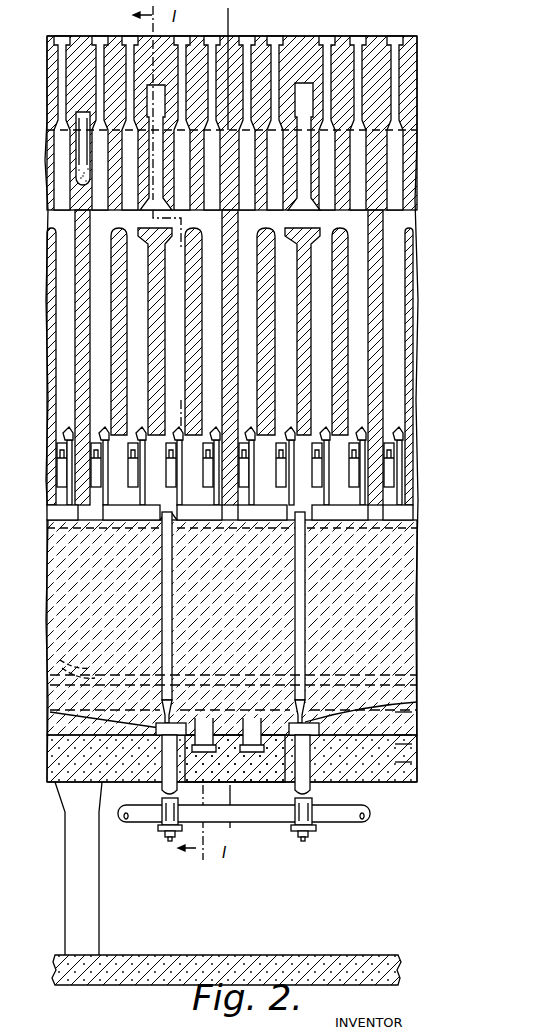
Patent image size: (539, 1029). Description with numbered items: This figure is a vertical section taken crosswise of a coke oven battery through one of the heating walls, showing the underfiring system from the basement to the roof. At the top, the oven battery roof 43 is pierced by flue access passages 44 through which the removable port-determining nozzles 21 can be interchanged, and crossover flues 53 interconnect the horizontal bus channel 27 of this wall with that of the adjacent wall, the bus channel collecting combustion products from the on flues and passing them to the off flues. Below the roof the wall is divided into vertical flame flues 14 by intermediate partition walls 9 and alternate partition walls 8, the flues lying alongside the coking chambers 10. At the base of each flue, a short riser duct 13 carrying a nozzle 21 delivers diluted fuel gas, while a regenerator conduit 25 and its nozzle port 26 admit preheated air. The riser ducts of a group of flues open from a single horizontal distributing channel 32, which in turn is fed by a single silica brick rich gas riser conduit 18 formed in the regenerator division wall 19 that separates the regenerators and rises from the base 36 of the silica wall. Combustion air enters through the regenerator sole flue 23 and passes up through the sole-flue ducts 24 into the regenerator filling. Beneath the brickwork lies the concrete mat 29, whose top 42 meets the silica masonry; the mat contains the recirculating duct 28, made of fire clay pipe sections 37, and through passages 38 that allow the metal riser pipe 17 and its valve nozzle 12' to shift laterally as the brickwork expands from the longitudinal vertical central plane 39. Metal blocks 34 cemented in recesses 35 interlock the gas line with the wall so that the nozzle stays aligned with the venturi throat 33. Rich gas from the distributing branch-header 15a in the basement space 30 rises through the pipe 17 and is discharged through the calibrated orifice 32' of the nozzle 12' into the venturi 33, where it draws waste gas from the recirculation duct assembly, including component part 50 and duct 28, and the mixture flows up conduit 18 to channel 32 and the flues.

The alternate partition wall 8 is at (82, 300).
The intermediate partition wall 9 is at (115, 275).
The coking chamber 10 is at (82, 154).
The valve nozzle 12' is at (157, 702).
The riser duct 13 is at (112, 508).
The flame flue 14 is at (385, 327).
The distributing branch-header 15a is at (142, 815).
The metal riser pipe 17 is at (162, 794).
The rich gas riser conduit 18 is at (172, 638).
The regenerator division wall 19 is at (50, 606).
The port-determining nozzle 21 is at (68, 432).
The regenerator sole flue 23 is at (50, 712).
The sole-flue duct 24 is at (50, 660).
The regenerator conduit 25 is at (58, 482).
The nozzle port 26 is at (60, 462).
The horizontal bus channel 27 is at (390, 219).
The recirculating duct 28 is at (255, 782).
The concrete mat 29 is at (52, 748).
The basement space 30 is at (282, 896).
The distributing channel 32 is at (226, 604).
The calibrated orifice 32' is at (206, 719).
The venturi throat 33 is at (362, 691).
The metal block 34 is at (400, 712).
The recess 35 is at (412, 760).
The base of silica wall 36 is at (412, 735).
The fire clay pipe section 37 is at (180, 800).
The through passage 38 is at (375, 783).
The longitudinal vertical central plane 39 is at (230, 24).
The top of concrete mat 42 is at (412, 744).
The oven battery roof 43 is at (58, 75).
The flue access passage 44 is at (112, 40).
The recirculation duct assembly component 50 is at (250, 716).
The crossover flue 53 is at (152, 100).